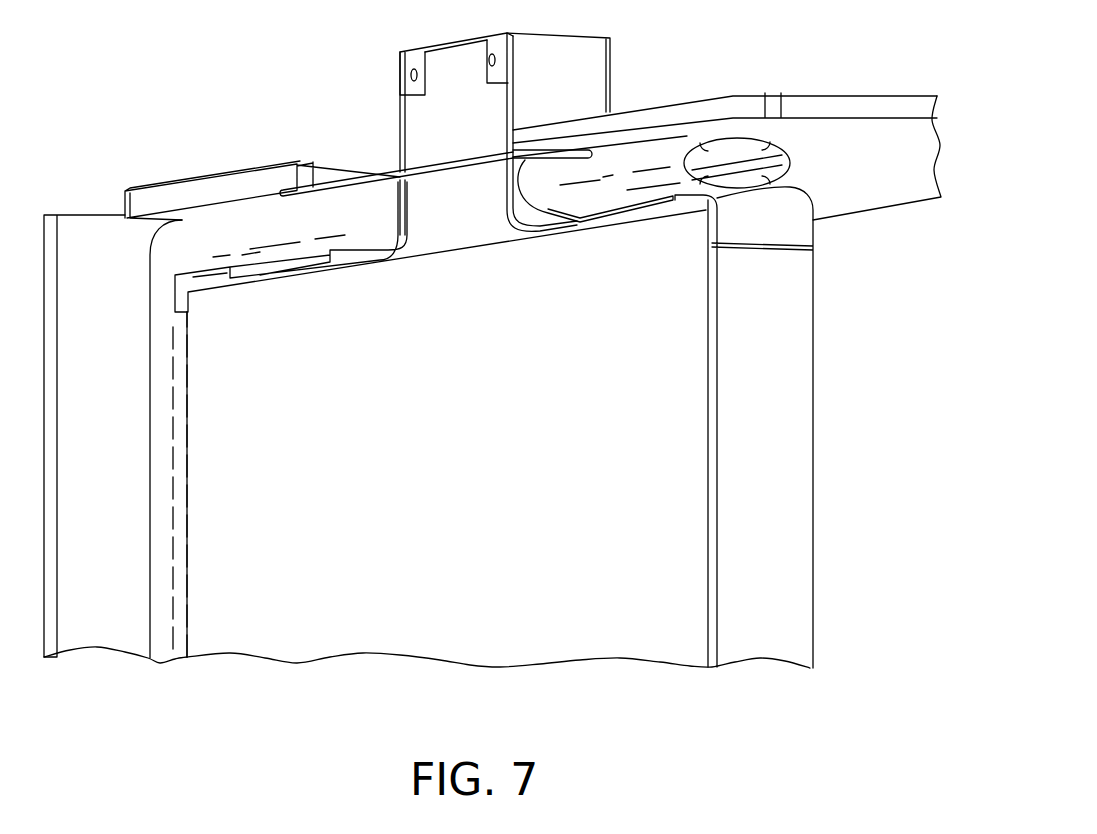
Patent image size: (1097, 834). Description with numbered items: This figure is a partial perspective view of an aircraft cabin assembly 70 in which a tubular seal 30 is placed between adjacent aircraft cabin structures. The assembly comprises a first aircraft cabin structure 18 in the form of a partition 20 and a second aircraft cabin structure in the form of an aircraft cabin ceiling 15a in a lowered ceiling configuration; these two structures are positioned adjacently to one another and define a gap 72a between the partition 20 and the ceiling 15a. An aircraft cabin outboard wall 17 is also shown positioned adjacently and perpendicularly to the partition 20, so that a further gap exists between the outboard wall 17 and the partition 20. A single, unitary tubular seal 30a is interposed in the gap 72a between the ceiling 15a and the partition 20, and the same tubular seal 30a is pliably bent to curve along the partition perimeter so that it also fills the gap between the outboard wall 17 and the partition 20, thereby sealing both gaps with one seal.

The aircraft cabin ceiling 15a is at (842, 147).
The aircraft cabin outboard wall 17 is at (118, 450).
The first aircraft cabin structure 18 is at (887, 194).
The partition 20 is at (448, 440).
The tubular seal 30 is at (627, 187).
The single tubular seal 30a is at (313, 230).
The aircraft cabin assembly 70 is at (840, 442).
The gap 72a is at (237, 210).